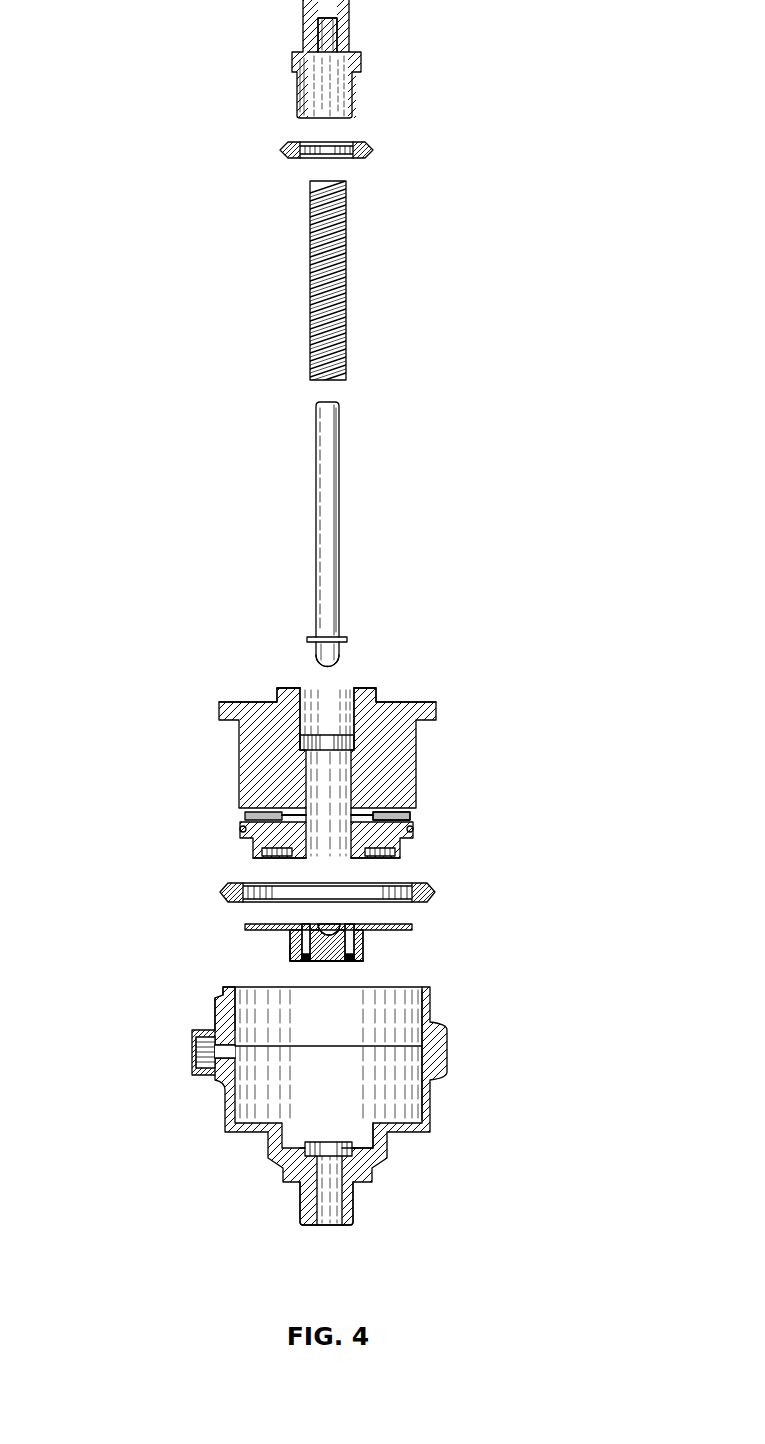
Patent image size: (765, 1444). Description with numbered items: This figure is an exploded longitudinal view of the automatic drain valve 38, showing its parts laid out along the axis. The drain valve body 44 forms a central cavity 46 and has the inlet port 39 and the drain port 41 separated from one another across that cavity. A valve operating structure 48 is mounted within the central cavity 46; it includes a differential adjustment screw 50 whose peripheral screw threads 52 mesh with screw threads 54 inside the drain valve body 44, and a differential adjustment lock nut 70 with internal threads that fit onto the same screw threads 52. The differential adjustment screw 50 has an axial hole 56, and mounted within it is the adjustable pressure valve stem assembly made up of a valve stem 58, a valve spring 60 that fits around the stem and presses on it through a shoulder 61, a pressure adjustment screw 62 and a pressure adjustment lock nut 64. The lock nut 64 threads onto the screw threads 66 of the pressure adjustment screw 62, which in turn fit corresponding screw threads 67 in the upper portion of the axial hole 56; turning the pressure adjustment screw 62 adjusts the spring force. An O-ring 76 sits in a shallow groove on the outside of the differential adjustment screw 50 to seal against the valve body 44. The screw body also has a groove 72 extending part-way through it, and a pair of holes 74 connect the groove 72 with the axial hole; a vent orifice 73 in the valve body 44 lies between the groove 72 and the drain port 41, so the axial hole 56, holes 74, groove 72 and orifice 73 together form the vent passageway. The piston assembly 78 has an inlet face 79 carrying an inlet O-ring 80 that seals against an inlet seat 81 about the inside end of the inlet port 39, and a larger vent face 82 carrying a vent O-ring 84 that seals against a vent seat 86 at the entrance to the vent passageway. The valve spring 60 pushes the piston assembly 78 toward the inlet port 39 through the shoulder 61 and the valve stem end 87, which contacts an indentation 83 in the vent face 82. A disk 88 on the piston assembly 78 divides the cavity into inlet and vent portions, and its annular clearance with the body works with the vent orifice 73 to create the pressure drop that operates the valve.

The automatic drain valve 38 is at (445, 1226).
The inlet port 39 is at (327, 1185).
The drain port 41 is at (192, 1040).
The drain valve body 44 is at (447, 1035).
The central cavity 46 is at (370, 1033).
The valve operating structure 48 is at (515, 407).
The differential adjustment screw 50 is at (257, 702).
The screw threads 52 is at (418, 765).
The screw threads 54 is at (235, 1008).
The axial hole 56 is at (303, 708).
The valve stem 58 is at (340, 508).
The valve spring 60 is at (347, 267).
The shoulder 61 is at (347, 638).
The pressure adjustment screw 62 is at (352, 32).
The pressure adjustment lock nut 64 is at (375, 147).
The screw threads 66 is at (352, 32).
The screw threads 67 is at (313, 687).
The differential adjustment lock nut 70 is at (435, 888).
The groove 72 is at (410, 815).
The vent orifice 73 is at (233, 1053).
The holes 74 is at (290, 812).
The O-ring 76 is at (243, 832).
The piston assembly 78 is at (216, 946).
The inlet face 79 is at (330, 961).
The inlet O-ring 80 is at (293, 957).
The inlet seat 81 is at (348, 1140).
The vent face 82 is at (412, 926).
The indentation 83 is at (350, 927).
The vent O-ring 84 is at (300, 932).
The vent seat 86 is at (309, 846).
The valve stem end 87 is at (318, 672).
The disk 88 is at (405, 931).